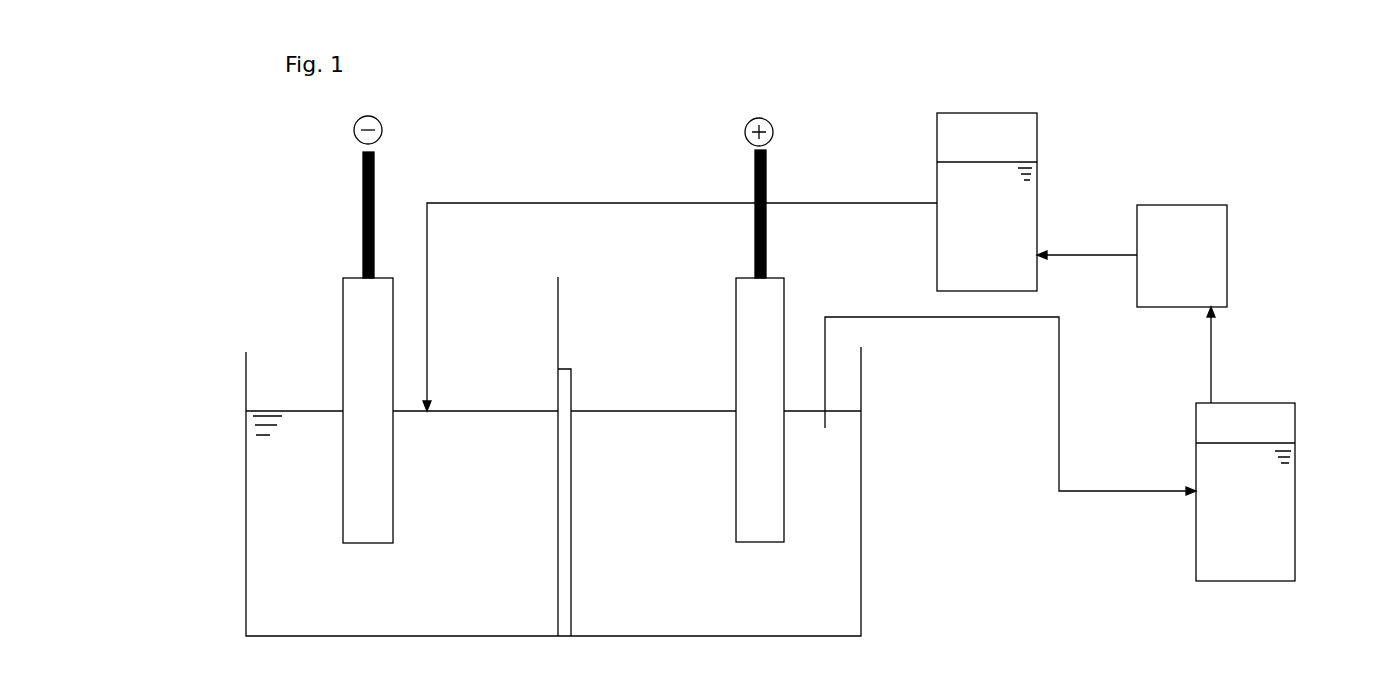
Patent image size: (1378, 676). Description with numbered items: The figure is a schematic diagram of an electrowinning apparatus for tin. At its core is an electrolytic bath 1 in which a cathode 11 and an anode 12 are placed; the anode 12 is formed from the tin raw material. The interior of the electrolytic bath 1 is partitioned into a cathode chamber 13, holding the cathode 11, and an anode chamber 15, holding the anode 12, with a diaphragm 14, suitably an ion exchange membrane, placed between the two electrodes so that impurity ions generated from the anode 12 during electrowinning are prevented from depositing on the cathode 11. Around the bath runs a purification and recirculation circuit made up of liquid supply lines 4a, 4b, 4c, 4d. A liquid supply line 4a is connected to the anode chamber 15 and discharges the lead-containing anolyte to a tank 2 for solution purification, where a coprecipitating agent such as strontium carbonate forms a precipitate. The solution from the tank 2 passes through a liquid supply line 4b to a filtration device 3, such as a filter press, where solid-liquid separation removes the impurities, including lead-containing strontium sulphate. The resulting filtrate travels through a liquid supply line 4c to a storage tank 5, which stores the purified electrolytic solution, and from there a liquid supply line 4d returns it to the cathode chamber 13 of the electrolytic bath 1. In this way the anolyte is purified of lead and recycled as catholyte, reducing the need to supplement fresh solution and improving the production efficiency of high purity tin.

The electrolytic bath 1 is at (246, 474).
The tank for solution purification 2 is at (1290, 492).
The filtration device 3 is at (1182, 256).
The liquid supply line 4a is at (1062, 456).
The liquid supply line 4b is at (1213, 376).
The liquid supply line 4c is at (1112, 255).
The liquid supply line 4d is at (670, 202).
The storage tank 5 is at (953, 181).
The cathode 11 is at (348, 300).
The anode 12 is at (772, 352).
The cathode chamber 13 is at (275, 609).
The diaphragm 14 is at (568, 389).
The anode chamber 15 is at (830, 603).